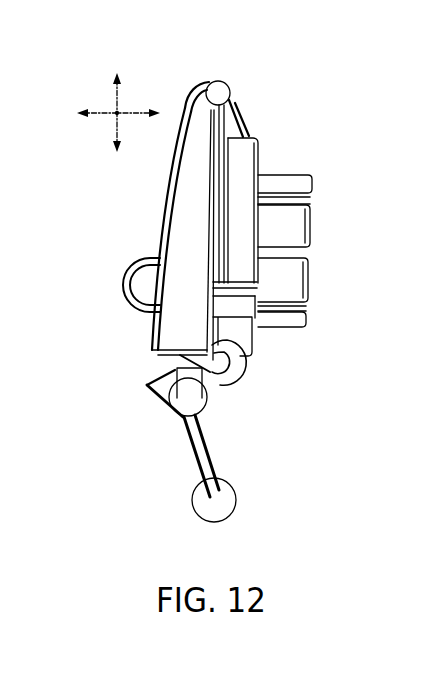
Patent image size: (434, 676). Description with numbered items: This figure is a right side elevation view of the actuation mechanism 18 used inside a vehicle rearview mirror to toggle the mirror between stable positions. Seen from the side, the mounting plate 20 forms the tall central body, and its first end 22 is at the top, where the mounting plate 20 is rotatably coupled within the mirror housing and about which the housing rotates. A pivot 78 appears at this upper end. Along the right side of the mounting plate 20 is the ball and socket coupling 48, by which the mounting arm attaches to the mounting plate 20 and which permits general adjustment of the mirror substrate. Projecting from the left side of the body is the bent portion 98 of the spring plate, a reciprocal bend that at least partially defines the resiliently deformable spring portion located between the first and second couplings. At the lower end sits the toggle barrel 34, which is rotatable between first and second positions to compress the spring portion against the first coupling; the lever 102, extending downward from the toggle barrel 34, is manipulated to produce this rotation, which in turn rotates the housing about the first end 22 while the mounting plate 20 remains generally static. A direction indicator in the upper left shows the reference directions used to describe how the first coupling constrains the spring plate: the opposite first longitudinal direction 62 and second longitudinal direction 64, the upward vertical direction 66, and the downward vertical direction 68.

The actuation mechanism 18 is at (292, 101).
The mounting plate 20 is at (237, 175).
The first end 22 is at (242, 80).
The toggle barrel 34 is at (207, 398).
The ball and socket coupling 48 is at (302, 222).
The first longitudinal direction 62 is at (120, 106).
The second longitudinal direction 64 is at (97, 116).
The upward vertical direction 66 is at (115, 98).
The downward vertical direction 68 is at (119, 131).
The pivot 78 is at (217, 81).
The bent portion 98 is at (146, 262).
The lever 102 is at (229, 500).